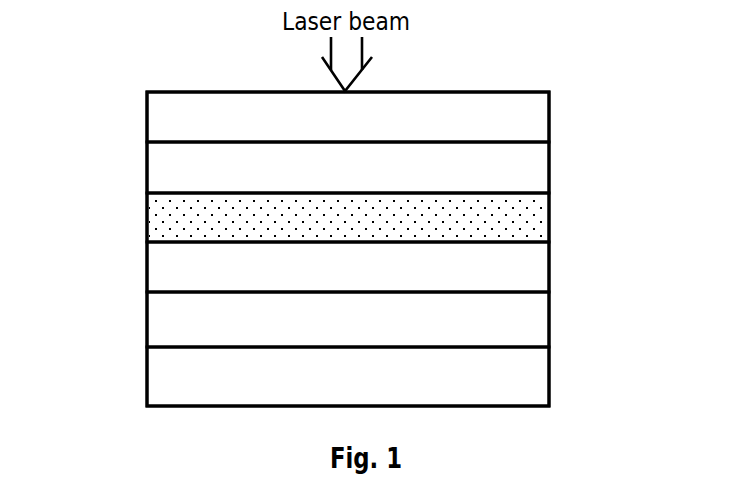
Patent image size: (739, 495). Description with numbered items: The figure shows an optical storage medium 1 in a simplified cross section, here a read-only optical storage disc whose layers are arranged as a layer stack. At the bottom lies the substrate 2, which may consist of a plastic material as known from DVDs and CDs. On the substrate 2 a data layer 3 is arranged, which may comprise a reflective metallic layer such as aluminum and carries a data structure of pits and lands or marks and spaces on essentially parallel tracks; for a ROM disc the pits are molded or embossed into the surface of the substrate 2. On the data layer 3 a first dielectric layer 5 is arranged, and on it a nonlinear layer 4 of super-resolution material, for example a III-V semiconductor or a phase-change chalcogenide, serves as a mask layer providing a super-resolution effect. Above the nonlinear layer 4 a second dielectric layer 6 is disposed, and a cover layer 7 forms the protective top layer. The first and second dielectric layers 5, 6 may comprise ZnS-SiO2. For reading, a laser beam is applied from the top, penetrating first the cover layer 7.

The optical storage medium 1 is at (197, 406).
The substrate 2 is at (520, 365).
The data layer 3 is at (165, 325).
The nonlinear layer 4 is at (163, 224).
The first dielectric layer 5 is at (520, 258).
The second dielectric layer 6 is at (520, 133).
The cover layer 7 is at (163, 118).